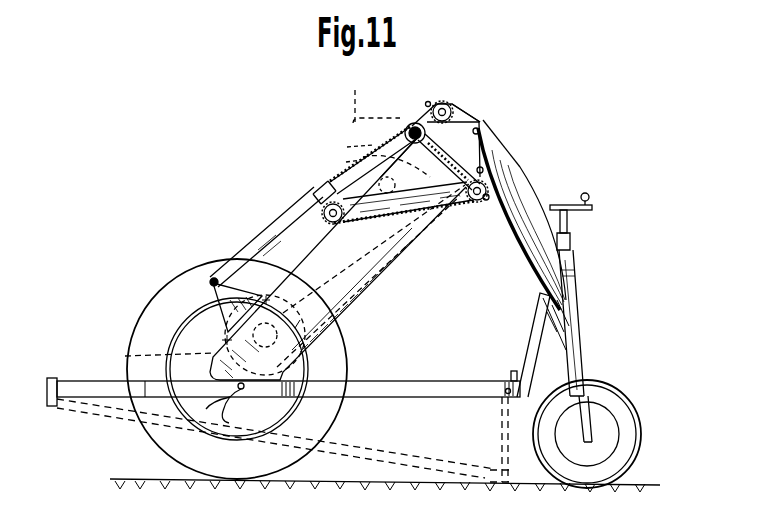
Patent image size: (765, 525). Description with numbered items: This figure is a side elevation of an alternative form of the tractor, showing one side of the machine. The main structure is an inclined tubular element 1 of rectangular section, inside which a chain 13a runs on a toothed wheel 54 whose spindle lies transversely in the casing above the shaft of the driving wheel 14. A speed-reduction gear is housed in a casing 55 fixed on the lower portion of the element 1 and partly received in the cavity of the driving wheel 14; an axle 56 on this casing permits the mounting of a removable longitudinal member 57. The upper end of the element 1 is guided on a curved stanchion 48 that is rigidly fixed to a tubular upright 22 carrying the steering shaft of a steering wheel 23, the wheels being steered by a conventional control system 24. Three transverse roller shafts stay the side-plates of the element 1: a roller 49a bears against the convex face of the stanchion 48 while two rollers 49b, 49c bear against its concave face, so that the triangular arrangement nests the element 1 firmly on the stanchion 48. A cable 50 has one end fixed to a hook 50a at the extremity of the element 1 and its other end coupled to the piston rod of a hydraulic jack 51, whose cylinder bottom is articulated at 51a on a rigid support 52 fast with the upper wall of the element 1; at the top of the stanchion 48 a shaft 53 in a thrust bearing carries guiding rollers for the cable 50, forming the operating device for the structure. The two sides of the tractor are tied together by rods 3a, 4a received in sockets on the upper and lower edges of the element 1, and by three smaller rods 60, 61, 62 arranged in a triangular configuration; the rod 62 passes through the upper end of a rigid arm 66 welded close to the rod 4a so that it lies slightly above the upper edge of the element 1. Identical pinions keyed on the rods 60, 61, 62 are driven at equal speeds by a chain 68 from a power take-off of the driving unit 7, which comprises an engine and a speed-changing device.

The tubular element 1 is at (437, 272).
The rod 3a is at (350, 208).
The rod 4a is at (461, 207).
The driving unit 7 is at (358, 128).
The chain 13a is at (384, 285).
The driving wheel 14 is at (145, 319).
The tubular upright 22 is at (576, 318).
The steering wheel 23 is at (621, 396).
The control system 24 is at (586, 192).
The curved stanchion 48 is at (513, 189).
The roller 49a is at (482, 125).
The roller 49b is at (430, 104).
The roller 49c is at (500, 152).
The cable 50 is at (330, 181).
The hook 50a is at (468, 117).
The hydraulic jack 51 is at (273, 227).
The articulation 51a is at (210, 278).
The rigid support 52 is at (207, 274).
The shaft 53 is at (447, 104).
The toothed wheel 54 is at (344, 306).
The casing 55 is at (126, 356).
The axle 56 is at (240, 398).
The removable longitudinal member 57 is at (413, 389).
The rod 60 is at (317, 206).
The rod 61 is at (487, 204).
The rod 62 is at (413, 124).
The rigid arm 66 is at (413, 130).
The chain 68 is at (393, 258).